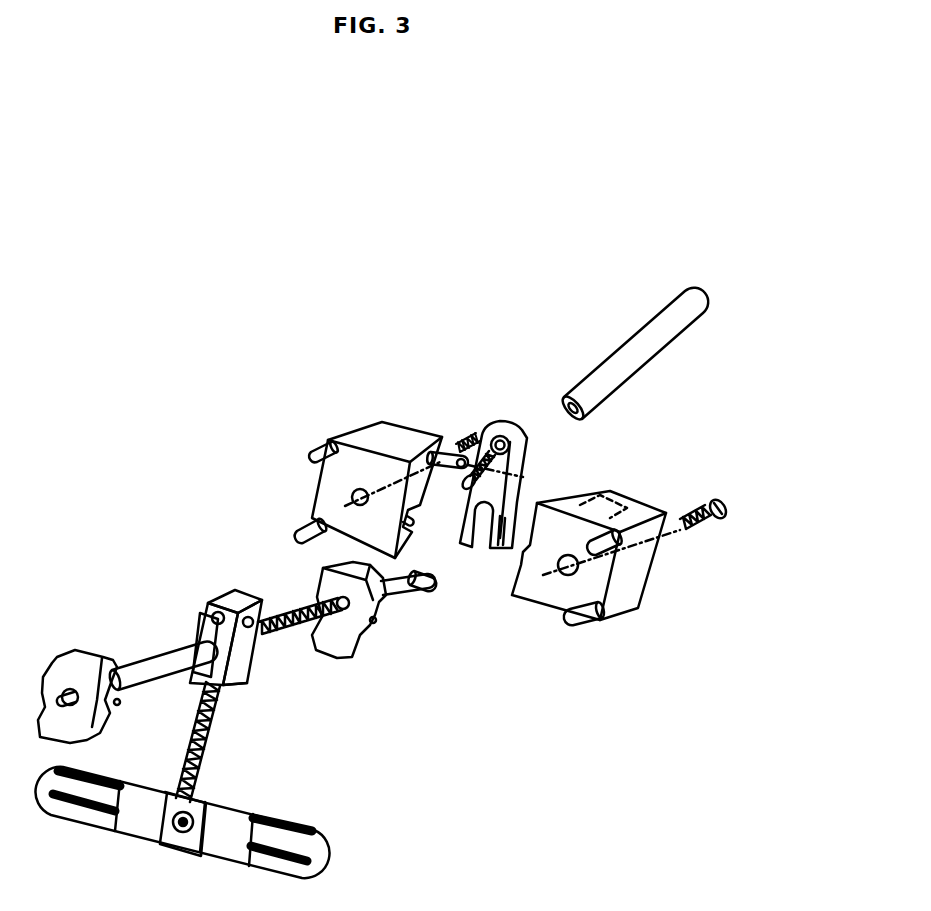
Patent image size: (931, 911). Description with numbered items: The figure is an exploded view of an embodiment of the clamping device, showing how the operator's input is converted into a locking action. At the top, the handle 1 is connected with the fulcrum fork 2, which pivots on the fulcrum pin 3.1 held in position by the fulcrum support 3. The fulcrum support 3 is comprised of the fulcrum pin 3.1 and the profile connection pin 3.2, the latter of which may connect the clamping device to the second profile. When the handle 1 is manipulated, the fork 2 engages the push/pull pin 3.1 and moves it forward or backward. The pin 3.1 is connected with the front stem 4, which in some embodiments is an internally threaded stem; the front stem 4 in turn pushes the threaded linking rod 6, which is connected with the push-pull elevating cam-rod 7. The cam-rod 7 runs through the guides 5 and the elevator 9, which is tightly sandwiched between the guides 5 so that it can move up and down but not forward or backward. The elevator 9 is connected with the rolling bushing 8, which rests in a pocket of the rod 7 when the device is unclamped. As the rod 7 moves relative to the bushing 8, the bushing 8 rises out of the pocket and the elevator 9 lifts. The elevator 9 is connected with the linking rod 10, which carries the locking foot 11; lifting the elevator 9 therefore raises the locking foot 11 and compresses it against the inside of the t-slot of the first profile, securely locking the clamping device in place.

The handle 1 is at (644, 361).
The fulcrum fork 2 is at (500, 420).
The fulcrum support 3 is at (355, 427).
The fulcrum pin 3.1 is at (446, 447).
The profile connection pin 3.2 is at (305, 520).
The front stem 4 is at (398, 596).
The guides 5 is at (75, 645).
The threaded linking rod 6 is at (292, 607).
The push-pull elevating cam-rod 7 is at (160, 648).
The rolling bushing 8 is at (205, 612).
The elevator 9 is at (243, 686).
The linking rod 10 is at (187, 743).
The locking foot 11 is at (98, 834).